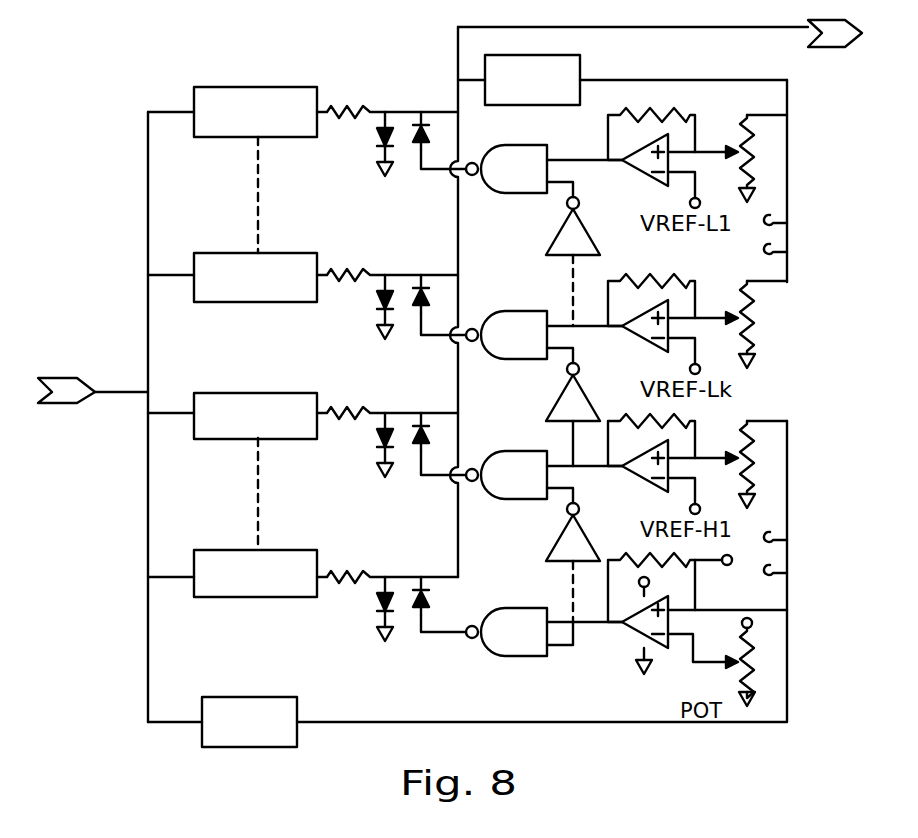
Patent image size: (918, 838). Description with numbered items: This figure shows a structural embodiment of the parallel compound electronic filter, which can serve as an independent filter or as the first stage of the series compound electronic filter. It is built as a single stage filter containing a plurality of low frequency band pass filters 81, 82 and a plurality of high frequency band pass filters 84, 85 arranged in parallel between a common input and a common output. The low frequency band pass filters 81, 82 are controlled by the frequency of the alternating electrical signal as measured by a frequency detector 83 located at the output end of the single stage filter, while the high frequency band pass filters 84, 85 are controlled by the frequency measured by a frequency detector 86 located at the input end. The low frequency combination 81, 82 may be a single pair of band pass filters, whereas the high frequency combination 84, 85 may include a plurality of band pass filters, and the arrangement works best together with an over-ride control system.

The low frequency band pass filter 81 is at (224, 137).
The low frequency band pass filter 82 is at (224, 302).
The frequency detector 83 is at (580, 70).
The high frequency band pass filter 84 is at (224, 439).
The high frequency band pass filter 85 is at (224, 597).
The frequency detector 86 is at (245, 697).